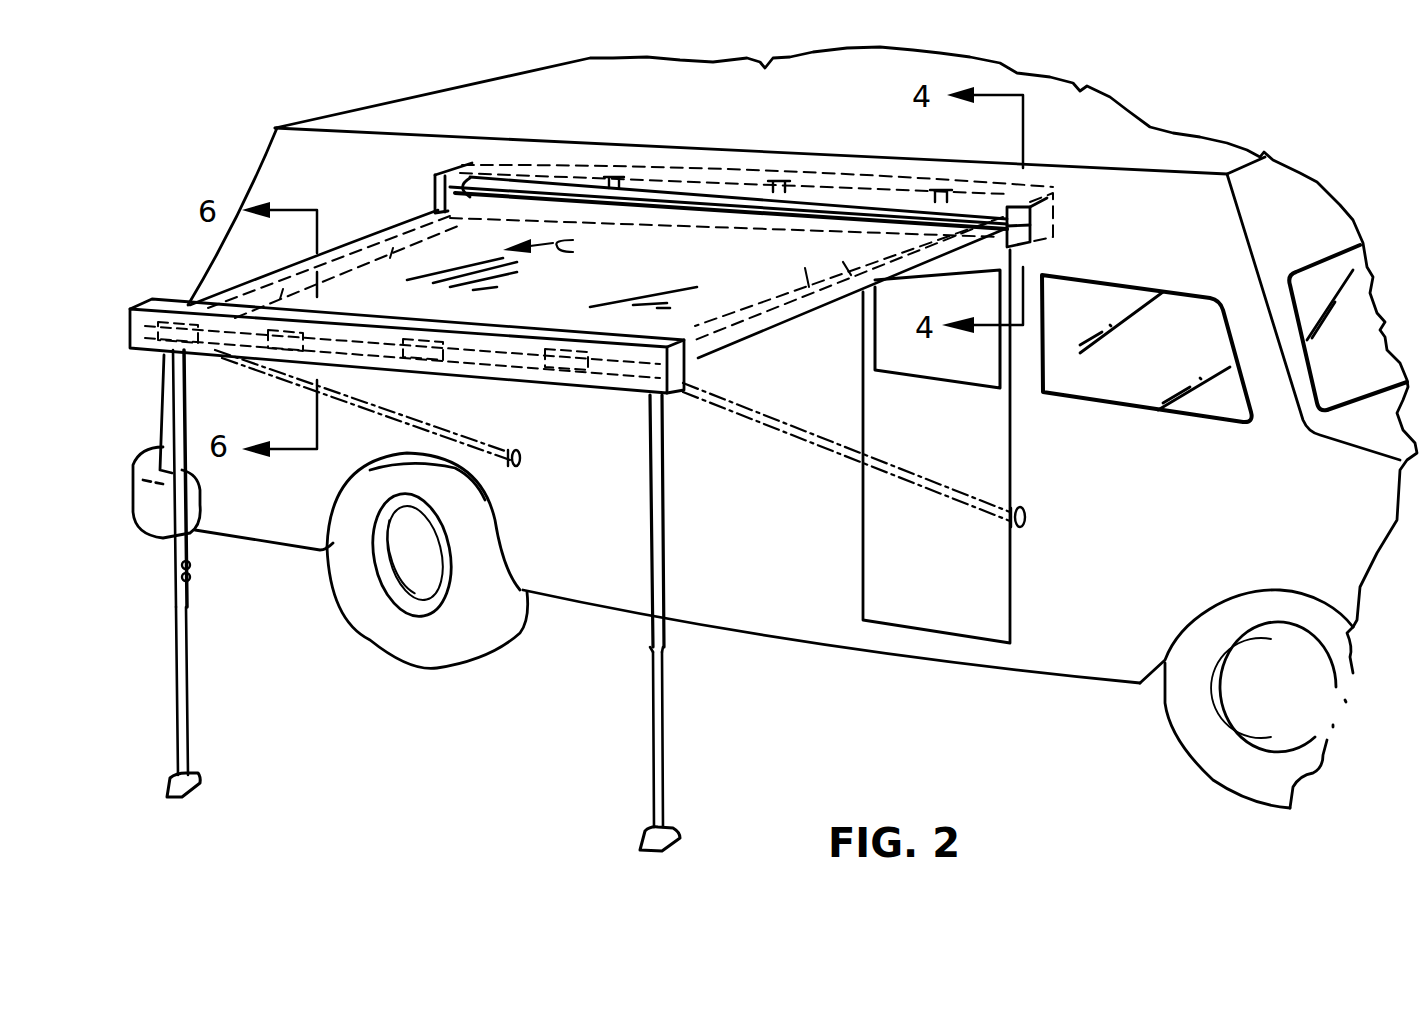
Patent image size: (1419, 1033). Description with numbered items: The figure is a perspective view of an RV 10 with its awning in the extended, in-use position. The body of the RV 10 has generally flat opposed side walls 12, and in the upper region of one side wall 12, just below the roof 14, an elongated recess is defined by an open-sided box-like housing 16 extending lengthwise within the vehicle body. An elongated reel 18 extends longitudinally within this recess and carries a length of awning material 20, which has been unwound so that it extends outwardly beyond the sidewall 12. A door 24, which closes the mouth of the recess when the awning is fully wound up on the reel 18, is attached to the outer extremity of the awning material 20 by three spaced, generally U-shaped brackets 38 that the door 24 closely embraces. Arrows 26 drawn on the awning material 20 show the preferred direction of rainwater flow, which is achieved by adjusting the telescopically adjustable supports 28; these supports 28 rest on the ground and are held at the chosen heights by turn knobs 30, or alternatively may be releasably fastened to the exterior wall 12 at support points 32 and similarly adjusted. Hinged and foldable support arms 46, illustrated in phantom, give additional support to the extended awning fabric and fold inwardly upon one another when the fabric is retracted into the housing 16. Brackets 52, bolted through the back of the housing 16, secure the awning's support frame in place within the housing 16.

The RV 10 is at (679, 78).
The side wall 12 is at (300, 143).
The roof 14 is at (445, 100).
The box-like housing 16 is at (816, 184).
The reel 18 is at (848, 210).
The awning material 20 is at (767, 321).
The door 24 is at (470, 365).
The arrows 26 is at (626, 275).
The telescopically adjustable supports 28 is at (185, 662).
The turn knobs 30 is at (189, 584).
The support points 32 is at (1027, 517).
The U-shaped brackets 38 is at (551, 380).
The support arms 46 is at (846, 270).
The brackets 52 is at (614, 176).